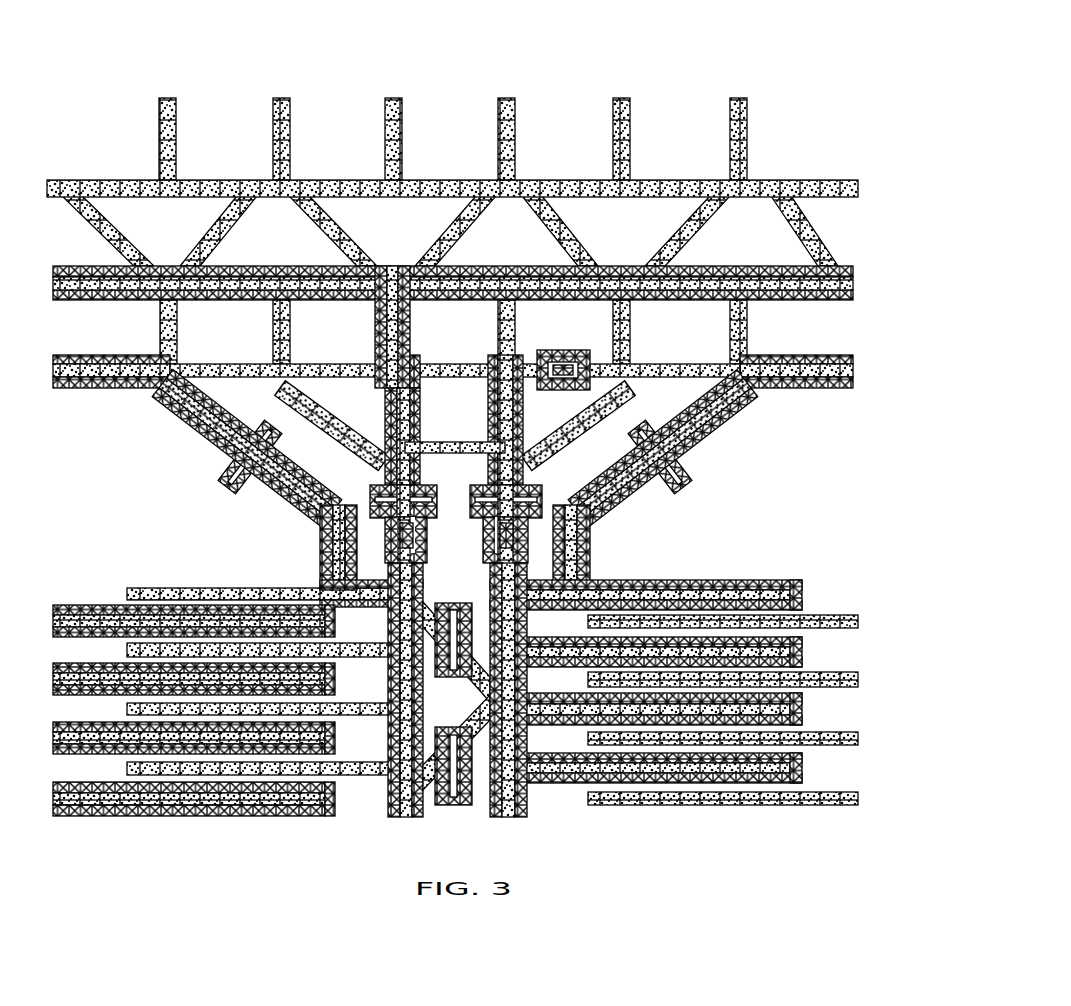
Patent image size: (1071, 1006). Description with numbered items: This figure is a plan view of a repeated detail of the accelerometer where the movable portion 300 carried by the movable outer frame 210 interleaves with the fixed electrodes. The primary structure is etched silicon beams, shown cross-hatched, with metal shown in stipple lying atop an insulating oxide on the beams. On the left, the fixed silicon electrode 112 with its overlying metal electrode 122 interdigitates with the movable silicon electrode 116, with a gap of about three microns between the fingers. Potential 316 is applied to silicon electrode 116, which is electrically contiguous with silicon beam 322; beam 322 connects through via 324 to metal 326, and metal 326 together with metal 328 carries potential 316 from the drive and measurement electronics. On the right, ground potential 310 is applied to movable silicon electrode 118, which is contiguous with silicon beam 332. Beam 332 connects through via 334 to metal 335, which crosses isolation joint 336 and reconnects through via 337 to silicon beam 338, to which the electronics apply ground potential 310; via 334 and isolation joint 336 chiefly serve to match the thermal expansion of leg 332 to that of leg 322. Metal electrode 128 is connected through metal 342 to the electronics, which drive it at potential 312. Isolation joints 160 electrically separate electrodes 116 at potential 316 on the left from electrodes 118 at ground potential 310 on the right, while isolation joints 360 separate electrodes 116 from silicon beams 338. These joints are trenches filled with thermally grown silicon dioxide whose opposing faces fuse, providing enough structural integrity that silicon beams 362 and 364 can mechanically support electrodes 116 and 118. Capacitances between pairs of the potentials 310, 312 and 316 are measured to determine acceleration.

The movable outer frame 210 is at (530, 170).
The metal 328 is at (535, 266).
The potential 316 is at (500, 266).
The silicon beam 338 is at (262, 364).
The movable portion 300 is at (463, 340).
The potential 312 is at (152, 358).
The ground potential 310 is at (212, 364).
The metal 326 is at (385, 412).
The isolation joint 336 is at (540, 482).
The silicon beam 362 is at (422, 404).
The metal 335 is at (524, 392).
The via 337 is at (562, 365).
The isolation joint 360 is at (232, 478).
The silicon beam 364 is at (230, 420).
The metal 342 is at (738, 422).
The silicon beam 322 is at (340, 542).
The silicon beam 332 is at (592, 536).
The via 324 is at (428, 533).
The via 334 is at (490, 540).
The movable silicon electrode 116 is at (275, 588).
The isolation joint 160 is at (455, 603).
The fixed silicon electrode 112 is at (82, 612).
The metal electrode 122 is at (155, 606).
The movable silicon electrode 118 is at (737, 580).
The metal electrode 128 is at (790, 580).